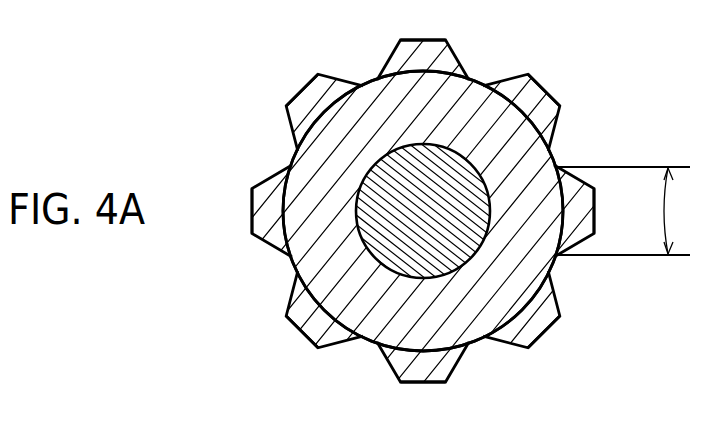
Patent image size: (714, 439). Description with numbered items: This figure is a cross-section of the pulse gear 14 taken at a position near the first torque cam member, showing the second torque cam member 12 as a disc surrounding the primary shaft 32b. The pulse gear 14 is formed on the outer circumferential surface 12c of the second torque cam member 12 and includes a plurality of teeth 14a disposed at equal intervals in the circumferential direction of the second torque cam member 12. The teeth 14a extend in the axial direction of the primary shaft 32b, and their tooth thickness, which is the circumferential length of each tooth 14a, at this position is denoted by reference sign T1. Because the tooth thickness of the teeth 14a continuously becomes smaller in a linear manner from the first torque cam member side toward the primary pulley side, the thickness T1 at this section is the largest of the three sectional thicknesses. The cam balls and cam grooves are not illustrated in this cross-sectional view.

The second torque cam member 12 is at (295, 162).
The outer circumferential surface 12c is at (477, 80).
The pulse gear 14 is at (528, 74).
The teeth 14a is at (421, 60).
The primary shaft 32b is at (377, 246).
The tooth thickness T1 is at (633, 211).